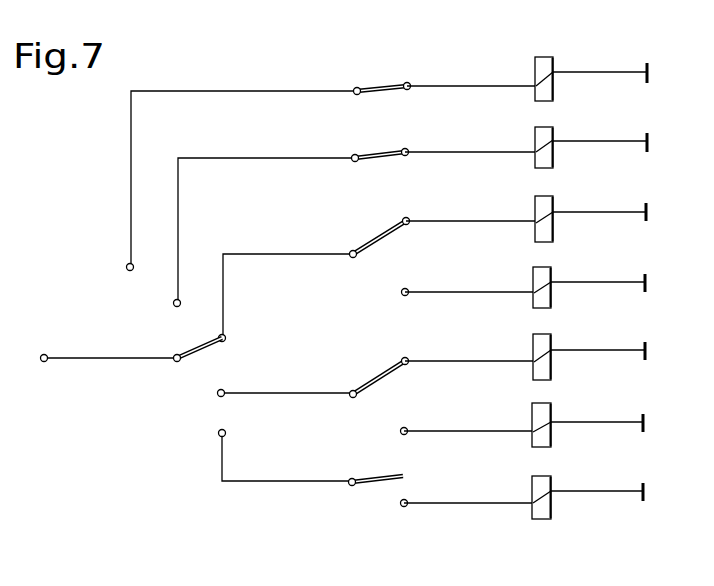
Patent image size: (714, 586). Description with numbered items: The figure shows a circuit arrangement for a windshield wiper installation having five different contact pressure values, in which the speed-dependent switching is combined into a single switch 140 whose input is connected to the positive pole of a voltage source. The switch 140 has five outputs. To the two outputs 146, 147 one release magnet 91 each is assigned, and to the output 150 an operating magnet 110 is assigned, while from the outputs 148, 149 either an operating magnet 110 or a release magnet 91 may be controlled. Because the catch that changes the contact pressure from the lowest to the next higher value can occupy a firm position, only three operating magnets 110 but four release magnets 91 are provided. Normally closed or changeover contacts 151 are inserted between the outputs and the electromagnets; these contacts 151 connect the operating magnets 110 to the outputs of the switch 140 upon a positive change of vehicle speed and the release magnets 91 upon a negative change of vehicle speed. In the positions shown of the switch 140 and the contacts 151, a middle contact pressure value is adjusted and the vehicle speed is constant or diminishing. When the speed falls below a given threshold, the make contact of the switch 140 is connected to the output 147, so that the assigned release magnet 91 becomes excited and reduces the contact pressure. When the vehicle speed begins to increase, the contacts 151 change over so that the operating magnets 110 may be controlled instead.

The release magnet 91 is at (540, 62).
The operating magnet 110 is at (548, 407).
The switch 140 is at (186, 388).
The output 146 is at (122, 269).
The output 147 is at (170, 302).
The output 148 is at (228, 335).
The output 149 is at (222, 390).
The output 150 is at (226, 431).
The changeover contact 151 is at (377, 81).